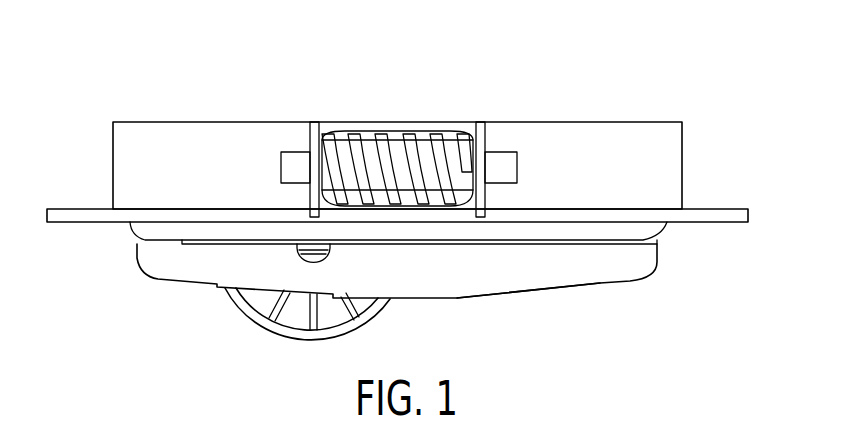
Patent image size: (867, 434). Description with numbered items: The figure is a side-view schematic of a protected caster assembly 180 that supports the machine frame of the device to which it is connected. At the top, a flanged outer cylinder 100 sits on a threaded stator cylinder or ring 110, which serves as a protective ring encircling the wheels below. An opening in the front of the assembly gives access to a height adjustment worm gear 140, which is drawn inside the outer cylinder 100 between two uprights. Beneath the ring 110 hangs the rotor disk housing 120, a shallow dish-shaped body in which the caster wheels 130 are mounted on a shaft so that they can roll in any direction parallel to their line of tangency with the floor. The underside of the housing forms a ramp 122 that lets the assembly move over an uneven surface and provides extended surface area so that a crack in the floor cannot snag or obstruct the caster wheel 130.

The flanged outer cylinder 100 is at (113, 160).
The threaded stator cylinder 110 is at (130, 229).
The rotor disk housing 120 is at (158, 279).
The ramp 122 is at (480, 297).
The caster wheel 130 is at (240, 308).
The height adjustment worm gear 140 is at (443, 132).
The caster assembly 180 is at (224, 77).